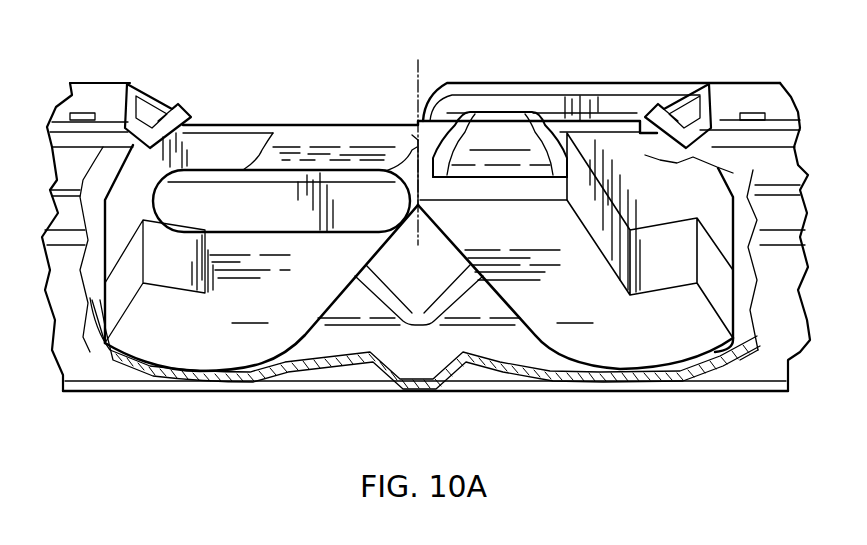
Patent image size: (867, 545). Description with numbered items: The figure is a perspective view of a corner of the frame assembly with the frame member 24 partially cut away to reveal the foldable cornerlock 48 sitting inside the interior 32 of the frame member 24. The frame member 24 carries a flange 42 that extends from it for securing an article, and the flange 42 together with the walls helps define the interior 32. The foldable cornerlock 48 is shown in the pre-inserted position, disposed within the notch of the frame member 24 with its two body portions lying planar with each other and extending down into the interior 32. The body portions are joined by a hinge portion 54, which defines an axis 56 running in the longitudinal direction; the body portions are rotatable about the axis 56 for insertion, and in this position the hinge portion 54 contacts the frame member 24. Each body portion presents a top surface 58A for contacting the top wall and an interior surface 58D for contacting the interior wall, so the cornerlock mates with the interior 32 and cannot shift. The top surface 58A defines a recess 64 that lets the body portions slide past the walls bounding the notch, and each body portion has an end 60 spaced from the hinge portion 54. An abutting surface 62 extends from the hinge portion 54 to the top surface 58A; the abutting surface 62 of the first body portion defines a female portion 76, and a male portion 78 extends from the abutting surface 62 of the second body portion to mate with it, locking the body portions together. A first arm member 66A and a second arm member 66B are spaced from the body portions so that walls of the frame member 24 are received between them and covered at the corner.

The frame member 24 is at (760, 370).
The interior 32 is at (91, 305).
The flange 42 is at (40, 90).
The foldable cornerlock 48 is at (347, 94).
The hinge portion 54 is at (414, 137).
The axis 56 is at (416, 63).
The top surface 58A is at (126, 285).
The interior surface 58D is at (419, 255).
The end 60 is at (123, 365).
The abutting surface 62 is at (335, 133).
The recess 64 is at (188, 247).
The first arm member 66A is at (555, 108).
The second arm member 66B is at (224, 200).
The female portion 76 is at (307, 158).
The male portion 78 is at (492, 128).